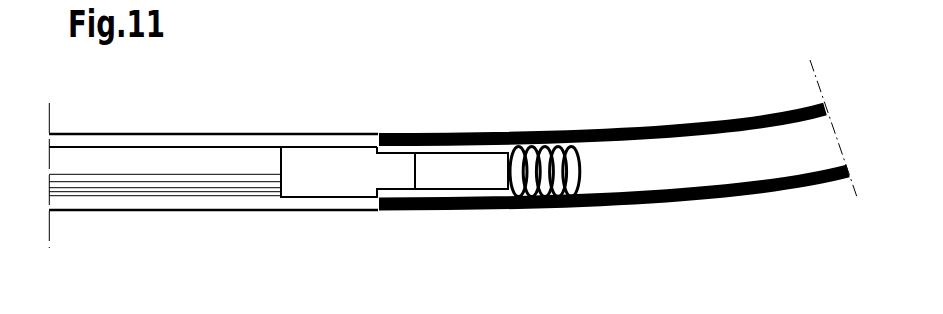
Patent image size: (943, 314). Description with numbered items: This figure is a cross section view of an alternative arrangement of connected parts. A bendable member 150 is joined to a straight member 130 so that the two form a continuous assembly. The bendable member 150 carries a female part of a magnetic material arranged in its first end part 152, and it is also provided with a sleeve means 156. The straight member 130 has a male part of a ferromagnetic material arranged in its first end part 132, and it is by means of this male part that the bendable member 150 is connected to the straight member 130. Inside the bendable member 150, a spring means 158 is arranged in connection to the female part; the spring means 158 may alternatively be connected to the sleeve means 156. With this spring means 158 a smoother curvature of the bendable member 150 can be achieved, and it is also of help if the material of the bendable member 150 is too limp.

The straight member 130 is at (170, 133).
The first end part 132 is at (320, 133).
The bendable member 150 is at (747, 115).
The first end part 152 is at (447, 133).
The sleeve means 156 is at (378, 212).
The spring means 158 is at (585, 168).